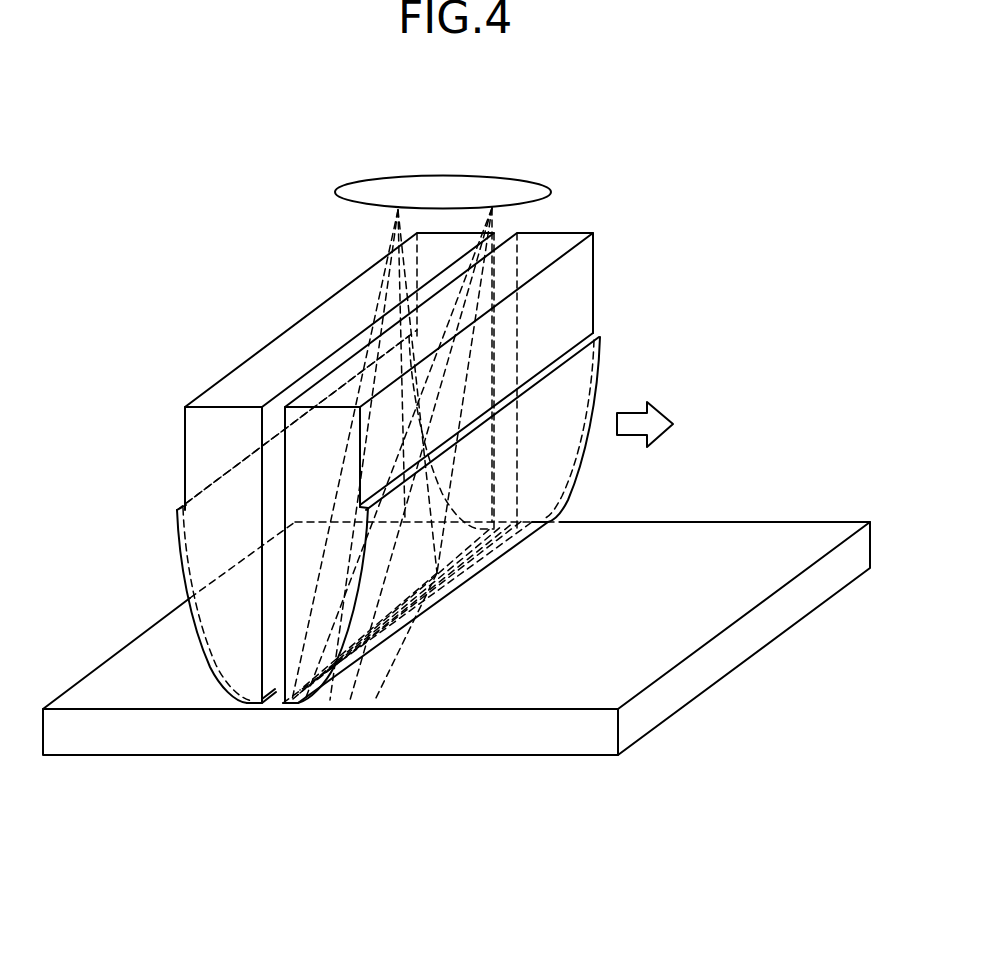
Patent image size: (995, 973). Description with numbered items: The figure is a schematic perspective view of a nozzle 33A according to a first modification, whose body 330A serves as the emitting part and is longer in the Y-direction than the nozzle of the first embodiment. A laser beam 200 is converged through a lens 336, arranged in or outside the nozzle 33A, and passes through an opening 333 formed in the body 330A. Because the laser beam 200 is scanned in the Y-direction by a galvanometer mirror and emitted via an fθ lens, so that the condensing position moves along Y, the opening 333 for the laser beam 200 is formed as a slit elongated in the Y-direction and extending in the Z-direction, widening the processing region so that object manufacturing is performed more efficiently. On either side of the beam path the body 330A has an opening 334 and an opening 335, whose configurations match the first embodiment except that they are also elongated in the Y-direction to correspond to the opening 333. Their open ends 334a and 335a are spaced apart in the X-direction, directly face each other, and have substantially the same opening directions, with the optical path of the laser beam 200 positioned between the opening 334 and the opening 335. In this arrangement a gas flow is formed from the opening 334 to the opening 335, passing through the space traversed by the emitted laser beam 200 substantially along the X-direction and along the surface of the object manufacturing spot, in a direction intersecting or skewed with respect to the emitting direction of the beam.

The nozzle 33A is at (346, 159).
The lens 336 is at (489, 188).
The laser beam 200 is at (394, 230).
The body 330A is at (598, 259).
The opening 333 is at (272, 422).
The opening 334 is at (441, 575).
The open end 334a is at (293, 707).
The opening 335 is at (323, 571).
The open end 335a is at (270, 705).